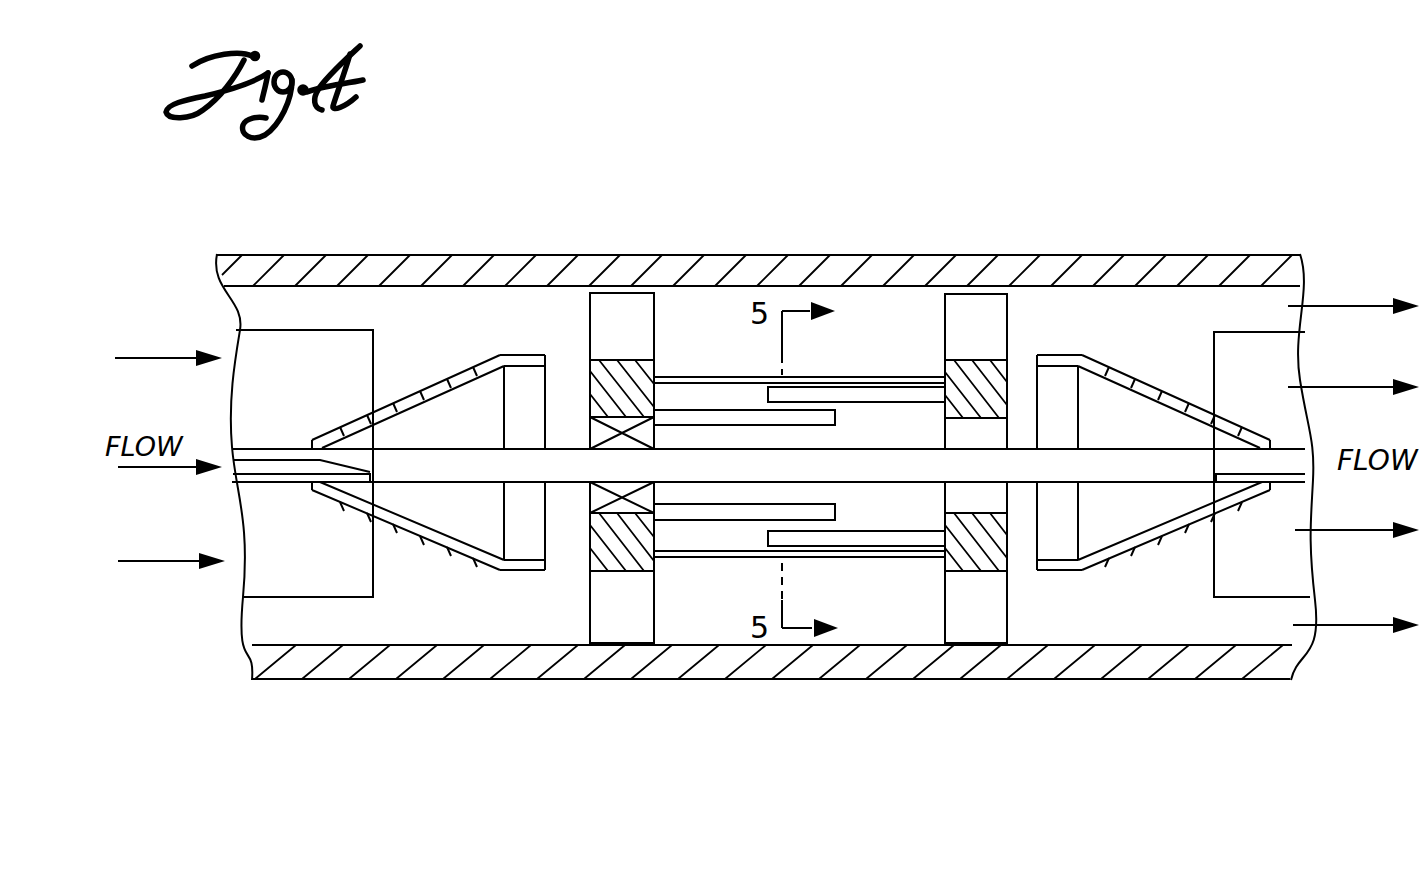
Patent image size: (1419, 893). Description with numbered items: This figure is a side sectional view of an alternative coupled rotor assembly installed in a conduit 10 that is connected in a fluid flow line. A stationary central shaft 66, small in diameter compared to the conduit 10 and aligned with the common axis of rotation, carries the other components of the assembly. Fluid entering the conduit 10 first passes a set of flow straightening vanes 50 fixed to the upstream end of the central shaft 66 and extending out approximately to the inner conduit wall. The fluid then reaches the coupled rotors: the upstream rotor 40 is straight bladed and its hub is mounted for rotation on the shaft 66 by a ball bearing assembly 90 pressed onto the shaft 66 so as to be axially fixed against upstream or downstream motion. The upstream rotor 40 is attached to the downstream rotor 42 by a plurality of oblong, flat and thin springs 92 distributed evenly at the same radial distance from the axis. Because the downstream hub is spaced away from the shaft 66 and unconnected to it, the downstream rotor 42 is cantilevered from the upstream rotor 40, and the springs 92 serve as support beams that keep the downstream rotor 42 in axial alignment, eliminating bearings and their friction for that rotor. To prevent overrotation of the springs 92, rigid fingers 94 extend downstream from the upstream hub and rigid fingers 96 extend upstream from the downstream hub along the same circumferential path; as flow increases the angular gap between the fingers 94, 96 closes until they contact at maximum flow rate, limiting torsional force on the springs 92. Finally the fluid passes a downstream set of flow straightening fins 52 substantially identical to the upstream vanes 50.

The conduit 10 is at (1150, 265).
The upstream rotor 40 is at (742, 471).
The downstream rotor 42 is at (966, 650).
The flow straightening vanes 50 is at (307, 572).
The flow straightening fins 52 is at (1257, 573).
The central shaft 66 is at (453, 464).
The ball bearing assembly 90 is at (590, 510).
The springs 92 is at (890, 377).
The rigid fingers 94 is at (693, 410).
The rigid fingers 96 is at (820, 388).